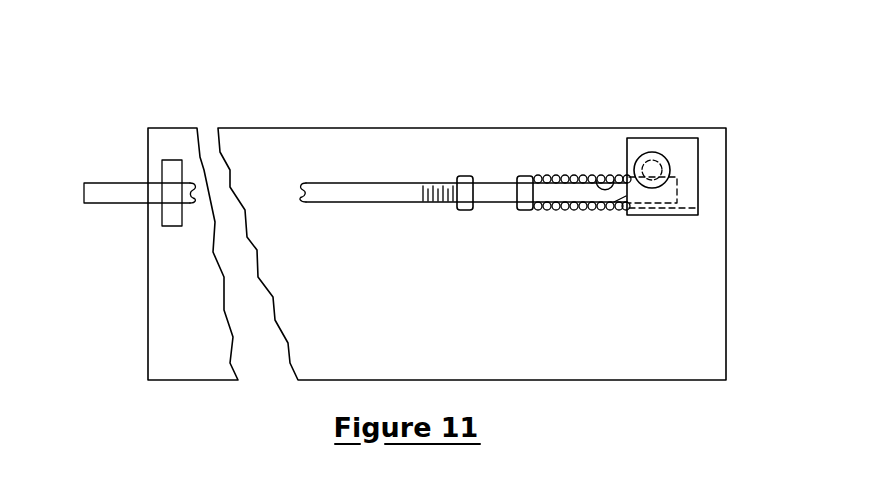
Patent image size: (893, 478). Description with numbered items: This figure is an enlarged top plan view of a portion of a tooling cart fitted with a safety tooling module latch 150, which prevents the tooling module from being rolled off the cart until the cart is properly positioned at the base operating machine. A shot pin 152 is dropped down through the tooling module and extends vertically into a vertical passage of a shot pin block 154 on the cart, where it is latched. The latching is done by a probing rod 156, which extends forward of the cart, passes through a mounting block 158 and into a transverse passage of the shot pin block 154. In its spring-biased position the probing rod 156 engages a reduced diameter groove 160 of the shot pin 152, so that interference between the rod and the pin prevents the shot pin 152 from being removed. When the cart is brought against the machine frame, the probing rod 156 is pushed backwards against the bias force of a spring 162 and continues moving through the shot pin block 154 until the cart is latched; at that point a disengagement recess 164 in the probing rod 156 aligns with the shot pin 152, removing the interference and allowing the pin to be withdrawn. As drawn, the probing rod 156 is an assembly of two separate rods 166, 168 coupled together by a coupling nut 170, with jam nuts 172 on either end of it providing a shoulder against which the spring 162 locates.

The safety tooling module latch 150 is at (575, 146).
The shot pin 152 is at (650, 160).
The shot pin block 154 is at (687, 158).
The probing rod 156 is at (73, 192).
The mounting block 158 is at (172, 168).
The reduced diameter groove 160 is at (665, 168).
The spring 162 is at (577, 207).
The disengagement recess 164 is at (597, 180).
The rod 166 is at (123, 196).
The rod 168 is at (619, 194).
The coupling nut 170 is at (492, 183).
The jam nuts 172 is at (463, 210).